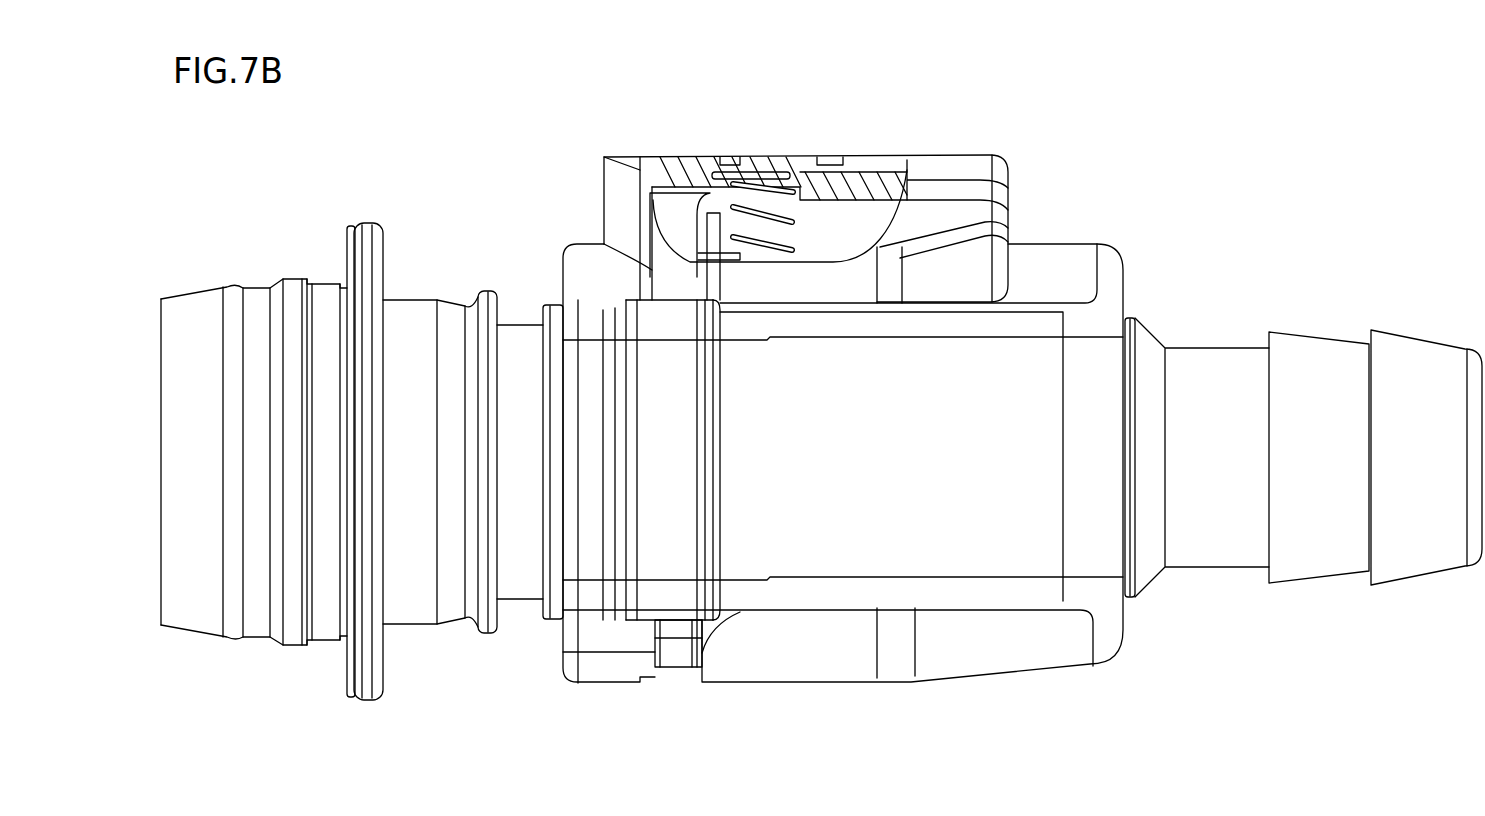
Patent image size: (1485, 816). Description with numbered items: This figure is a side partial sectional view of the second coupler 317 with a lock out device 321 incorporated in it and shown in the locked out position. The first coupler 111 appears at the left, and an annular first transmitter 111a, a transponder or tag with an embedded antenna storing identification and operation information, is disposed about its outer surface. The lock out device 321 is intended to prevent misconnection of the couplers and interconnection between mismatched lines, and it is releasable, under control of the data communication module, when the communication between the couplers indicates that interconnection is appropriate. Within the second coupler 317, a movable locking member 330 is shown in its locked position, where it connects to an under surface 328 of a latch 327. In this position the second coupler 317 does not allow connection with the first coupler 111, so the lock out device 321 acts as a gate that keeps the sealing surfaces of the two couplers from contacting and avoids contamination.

The first coupler 111 is at (288, 245).
The first transmitter 111a is at (348, 665).
The second coupler 317 is at (1149, 274).
The lock out device 321 is at (958, 155).
The latch 327 is at (698, 157).
The under surface 328 is at (797, 170).
The locking member 330 is at (840, 165).